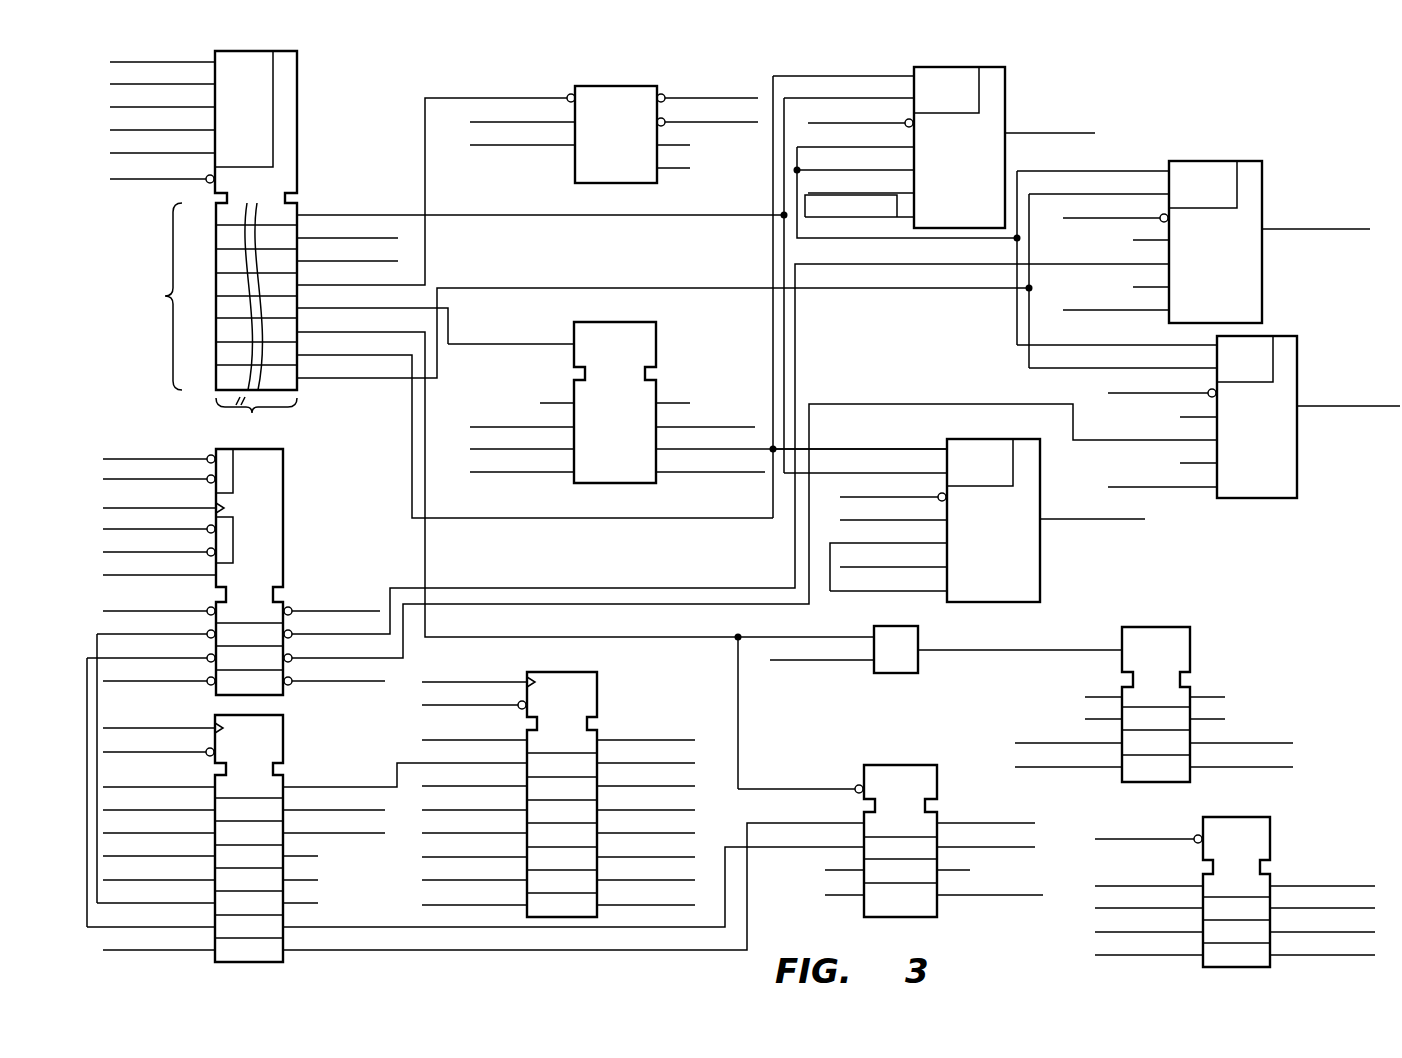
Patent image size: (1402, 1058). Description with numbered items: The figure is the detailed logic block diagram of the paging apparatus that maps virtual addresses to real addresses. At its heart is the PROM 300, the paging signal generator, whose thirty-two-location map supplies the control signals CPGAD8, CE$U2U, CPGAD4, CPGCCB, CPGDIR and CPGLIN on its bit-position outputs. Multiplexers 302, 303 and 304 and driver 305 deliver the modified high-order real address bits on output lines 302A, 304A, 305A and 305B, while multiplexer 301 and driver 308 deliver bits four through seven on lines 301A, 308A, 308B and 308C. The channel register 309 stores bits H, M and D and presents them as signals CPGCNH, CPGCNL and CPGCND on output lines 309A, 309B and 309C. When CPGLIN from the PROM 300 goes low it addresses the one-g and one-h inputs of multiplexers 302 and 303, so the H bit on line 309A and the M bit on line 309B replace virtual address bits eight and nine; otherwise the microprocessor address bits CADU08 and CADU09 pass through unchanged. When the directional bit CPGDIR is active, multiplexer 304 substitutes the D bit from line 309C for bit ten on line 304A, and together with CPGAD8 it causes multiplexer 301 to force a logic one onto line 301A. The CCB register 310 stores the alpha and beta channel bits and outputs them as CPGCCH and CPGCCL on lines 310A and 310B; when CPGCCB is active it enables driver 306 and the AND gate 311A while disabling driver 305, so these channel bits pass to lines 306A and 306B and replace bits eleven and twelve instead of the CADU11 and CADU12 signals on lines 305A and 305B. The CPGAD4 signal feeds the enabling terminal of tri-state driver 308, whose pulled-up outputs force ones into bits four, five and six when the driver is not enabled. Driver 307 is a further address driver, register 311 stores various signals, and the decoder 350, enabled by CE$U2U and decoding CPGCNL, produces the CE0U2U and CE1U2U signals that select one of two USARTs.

The PROM 300 is at (297, 127).
The multiplexer 301 is at (1005, 100).
The output line 301A is at (1098, 134).
The multiplexer 302 is at (1262, 195).
The output line 302A is at (1320, 232).
The multiplexer 303 is at (1297, 372).
The multiplexer 304 is at (1040, 586).
The output line 304A is at (1100, 521).
The driver 305 is at (1190, 650).
The output line 305A is at (1293, 744).
The output line 305B is at (1285, 768).
The driver 306 is at (897, 765).
The output line 306A is at (1032, 825).
The output line 306B is at (1032, 848).
The driver 307 is at (1270, 842).
The driver 308 is at (656, 342).
The output line 308A is at (672, 478).
The output line 308B is at (765, 472).
The output line 308C is at (752, 428).
The channel register 309 is at (283, 481).
The output line 309A is at (548, 588).
The output line 309B is at (582, 604).
The output line 309C is at (372, 683).
The CCB register 310 is at (283, 742).
The output line 310A is at (510, 927).
The output line 310B is at (465, 952).
The register 311 is at (597, 690).
The AND gate 311A is at (918, 665).
The decoder 350 is at (620, 183).